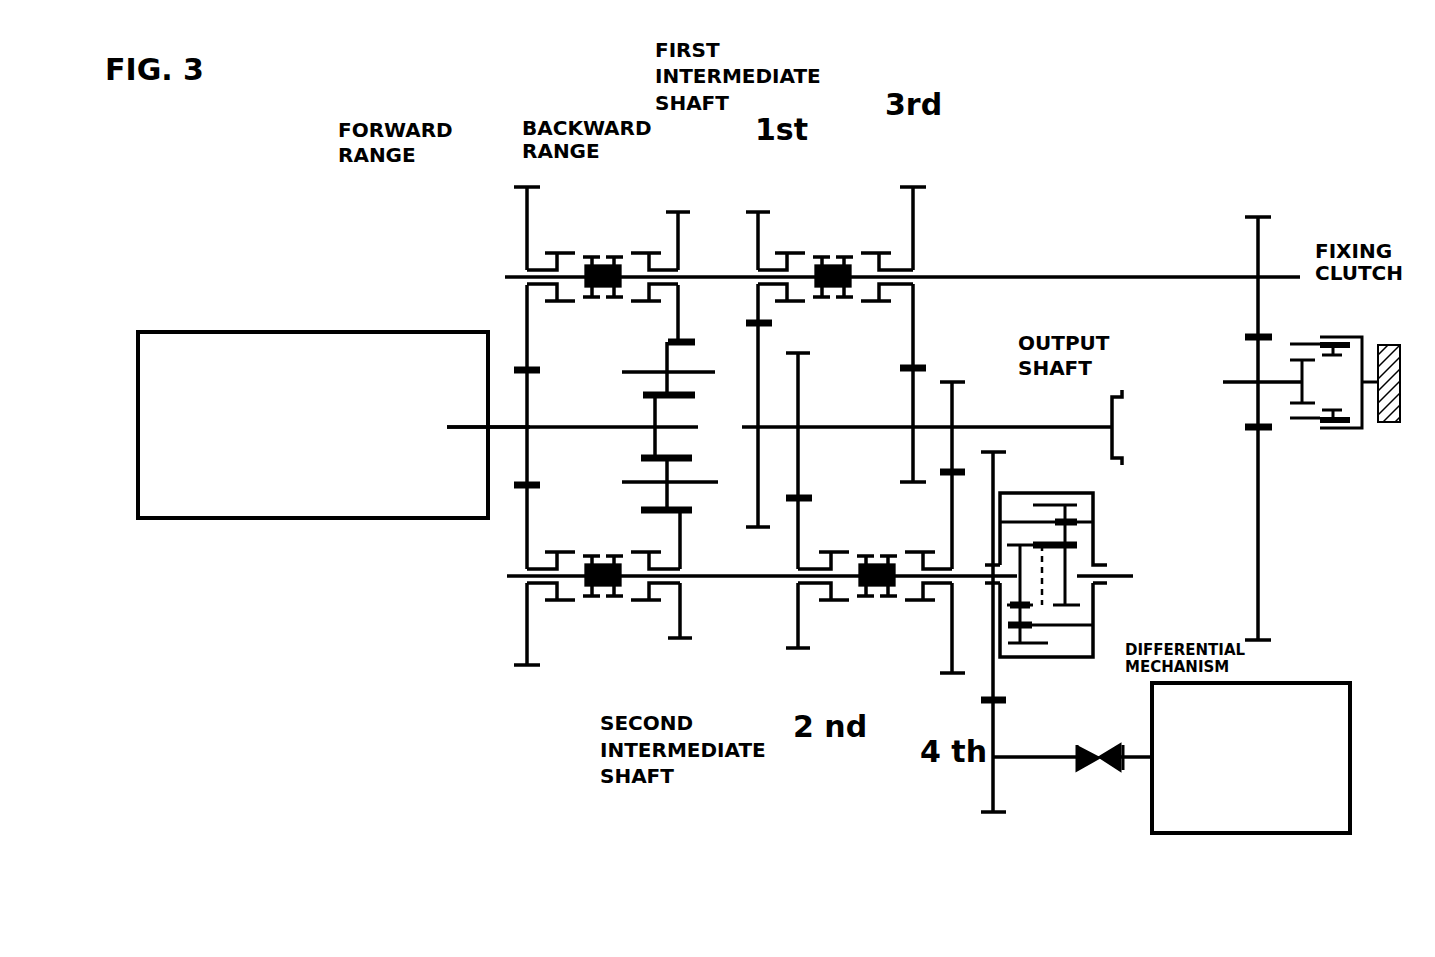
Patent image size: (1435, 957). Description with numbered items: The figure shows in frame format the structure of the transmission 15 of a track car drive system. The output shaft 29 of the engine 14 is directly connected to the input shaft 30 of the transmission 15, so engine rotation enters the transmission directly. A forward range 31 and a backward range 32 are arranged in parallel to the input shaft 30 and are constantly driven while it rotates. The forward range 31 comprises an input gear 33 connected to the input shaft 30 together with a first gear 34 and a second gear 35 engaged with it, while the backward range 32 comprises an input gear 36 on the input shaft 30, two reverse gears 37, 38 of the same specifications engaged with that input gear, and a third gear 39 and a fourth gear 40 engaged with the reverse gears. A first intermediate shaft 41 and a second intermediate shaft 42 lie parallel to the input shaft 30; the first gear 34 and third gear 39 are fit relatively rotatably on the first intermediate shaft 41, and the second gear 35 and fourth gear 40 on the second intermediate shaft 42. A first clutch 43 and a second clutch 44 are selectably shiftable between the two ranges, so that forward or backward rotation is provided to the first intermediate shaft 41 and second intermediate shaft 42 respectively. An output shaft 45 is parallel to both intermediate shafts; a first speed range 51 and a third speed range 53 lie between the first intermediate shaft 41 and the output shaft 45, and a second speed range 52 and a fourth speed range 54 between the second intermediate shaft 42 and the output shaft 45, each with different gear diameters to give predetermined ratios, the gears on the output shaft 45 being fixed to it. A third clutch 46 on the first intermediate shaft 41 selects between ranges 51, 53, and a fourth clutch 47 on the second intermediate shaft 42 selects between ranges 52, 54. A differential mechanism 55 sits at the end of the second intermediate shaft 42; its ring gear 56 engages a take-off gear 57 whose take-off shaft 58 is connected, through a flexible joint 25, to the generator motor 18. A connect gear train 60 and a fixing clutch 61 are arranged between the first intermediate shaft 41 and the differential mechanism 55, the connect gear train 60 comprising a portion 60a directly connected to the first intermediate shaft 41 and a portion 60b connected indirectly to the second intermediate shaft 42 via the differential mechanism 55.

The engine 14 is at (238, 330).
The transmission 15 is at (1121, 173).
The generator motor 18 is at (1252, 835).
The flexible joint 25 is at (1108, 765).
The output shaft 29 is at (458, 426).
The input shaft 30 is at (592, 426).
The forward range 31 is at (521, 215).
The backward range 32 is at (668, 233).
The input gear 33 is at (530, 395).
The first gear 34 is at (524, 325).
The second gear 35 is at (525, 541).
The input gear 36 is at (652, 443).
The reverse gear 37 is at (672, 360).
The reverse gear 38 is at (672, 499).
The third gear 39 is at (680, 304).
The fourth gear 40 is at (680, 610).
The first intermediate shaft 41 is at (722, 275).
The second intermediate shaft 42 is at (733, 579).
The first clutch 43 is at (602, 260).
The second clutch 44 is at (604, 603).
The output shaft 45 is at (1064, 425).
The third clutch 46 is at (835, 261).
The fourth clutch 47 is at (875, 560).
The first speed range 51 is at (762, 210).
The second speed range 52 is at (798, 664).
The third speed range 53 is at (913, 186).
The fourth speed range 54 is at (952, 678).
The differential mechanism 55 is at (1097, 619).
The ring gear 56 is at (1002, 692).
The take-off gear 57 is at (991, 787).
The take-off shaft 58 is at (1057, 760).
The connect gear train 60 is at (1300, 518).
The connect gear train portion 60a is at (1244, 340).
The connect gear train portion 60b is at (1240, 487).
The fixing clutch 61 is at (1333, 338).